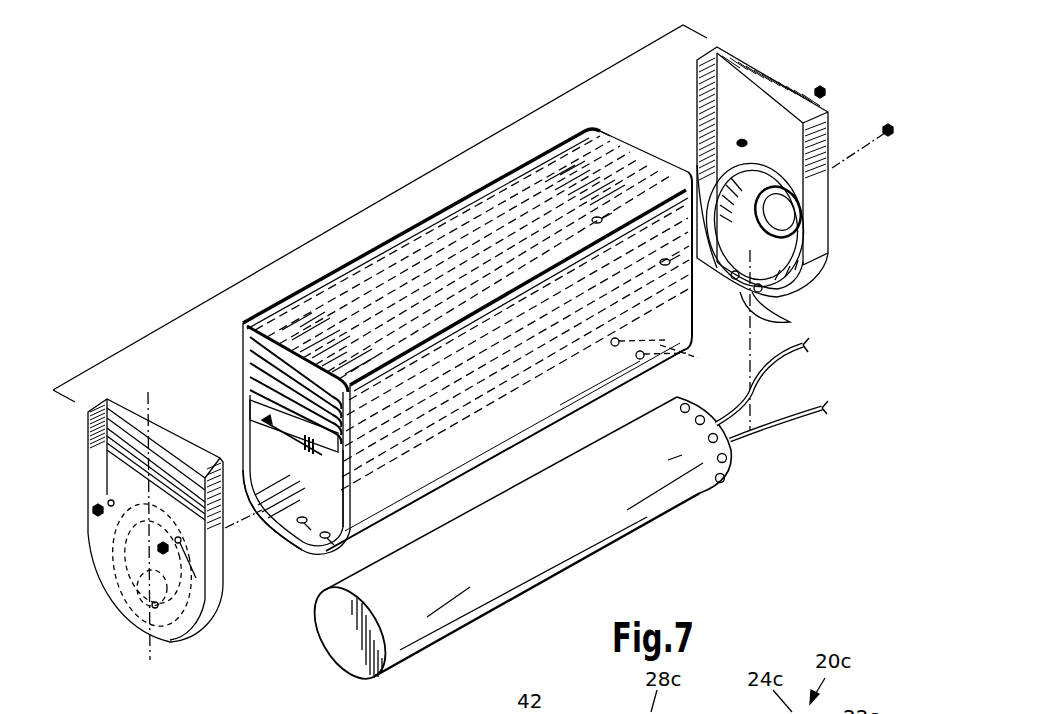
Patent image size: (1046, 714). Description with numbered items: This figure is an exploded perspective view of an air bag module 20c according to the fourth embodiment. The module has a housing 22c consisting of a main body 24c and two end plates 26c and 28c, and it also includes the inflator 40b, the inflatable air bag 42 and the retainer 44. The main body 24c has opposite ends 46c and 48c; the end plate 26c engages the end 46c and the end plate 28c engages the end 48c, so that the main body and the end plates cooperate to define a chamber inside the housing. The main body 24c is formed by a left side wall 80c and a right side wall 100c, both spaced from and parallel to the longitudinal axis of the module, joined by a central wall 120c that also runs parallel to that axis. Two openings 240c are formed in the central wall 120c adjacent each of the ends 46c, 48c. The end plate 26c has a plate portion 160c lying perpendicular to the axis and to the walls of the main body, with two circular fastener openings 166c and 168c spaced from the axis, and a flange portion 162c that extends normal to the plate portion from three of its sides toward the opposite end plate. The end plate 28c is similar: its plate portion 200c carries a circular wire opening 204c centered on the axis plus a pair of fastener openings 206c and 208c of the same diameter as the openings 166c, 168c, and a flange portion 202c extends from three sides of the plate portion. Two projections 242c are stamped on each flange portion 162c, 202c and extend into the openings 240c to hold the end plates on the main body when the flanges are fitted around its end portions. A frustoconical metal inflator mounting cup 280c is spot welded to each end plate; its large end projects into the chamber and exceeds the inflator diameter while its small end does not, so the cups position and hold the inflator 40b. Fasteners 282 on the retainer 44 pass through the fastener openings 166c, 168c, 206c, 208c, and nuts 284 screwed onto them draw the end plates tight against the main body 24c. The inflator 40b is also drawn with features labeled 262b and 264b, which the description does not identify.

The air bag module 20c is at (346, 110).
The housing 22c is at (388, 196).
The main body 24c is at (506, 160).
The inflatable air bag 42 is at (403, 284).
The end of main body 48c is at (590, 128).
The left side wall 80c is at (241, 396).
The retainer 44 is at (246, 430).
The fasteners 282 is at (327, 455).
The end of main body 46c is at (345, 480).
The openings 240c is at (300, 524).
The central wall 120c is at (265, 538).
The right side wall 100c is at (504, 423).
The end plate 28c is at (842, 280).
The plate portion 200c is at (762, 112).
The fastener opening 208c is at (812, 180).
The flange portion 202c is at (806, 238).
The wire opening 204c is at (775, 218).
The fastener opening 206c is at (740, 142).
The inflator mounting cup 280c is at (717, 168).
The nuts 284 is at (888, 125).
The projections 242c is at (783, 320).
The end plate 26c is at (92, 626).
The fastener opening 166c is at (111, 498).
The plate portion 160c is at (186, 482).
The flange portion 162c is at (217, 533).
The fastener opening 168c is at (207, 540).
The inflator 40b is at (619, 565).
The canister surface 262b is at (658, 505).
The canister end holes 264b is at (724, 480).